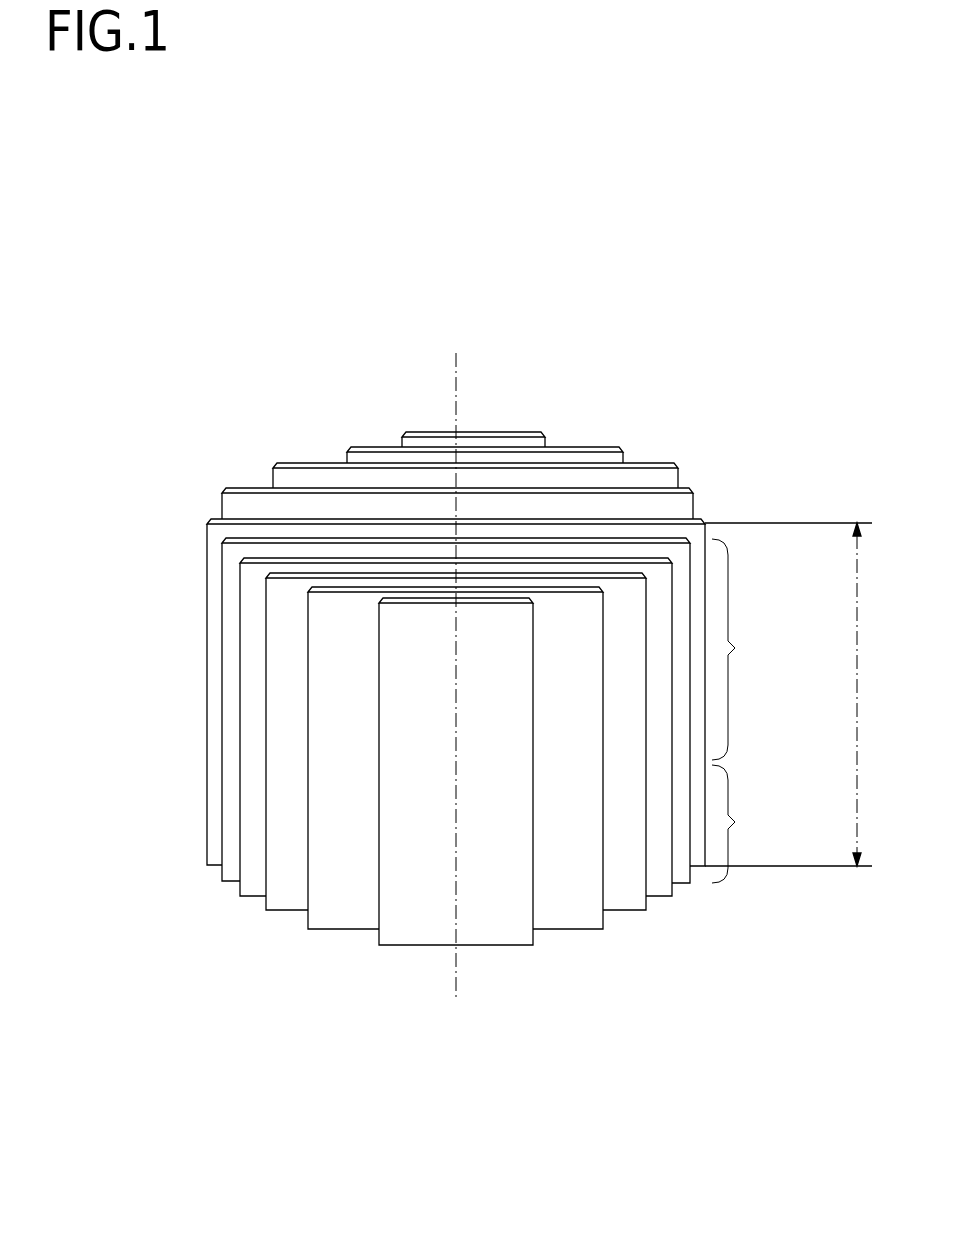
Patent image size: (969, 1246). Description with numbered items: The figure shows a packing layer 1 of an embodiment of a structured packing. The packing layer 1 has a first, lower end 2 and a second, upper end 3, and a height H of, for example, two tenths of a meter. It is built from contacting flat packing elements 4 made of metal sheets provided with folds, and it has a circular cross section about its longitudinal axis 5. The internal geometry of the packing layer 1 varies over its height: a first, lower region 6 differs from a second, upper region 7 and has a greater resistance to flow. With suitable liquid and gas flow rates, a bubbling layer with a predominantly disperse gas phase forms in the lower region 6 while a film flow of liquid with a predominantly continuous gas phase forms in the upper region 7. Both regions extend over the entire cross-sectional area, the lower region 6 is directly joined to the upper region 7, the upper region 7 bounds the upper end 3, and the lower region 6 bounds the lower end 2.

The packing layer 1 is at (578, 428).
The first, lower end 2 is at (192, 868).
The second, upper end 3 is at (197, 553).
The flat packing elements 4 is at (628, 912).
The longitudinal axis 5 is at (457, 407).
The first, lower region 6 is at (737, 824).
The second, upper region 7 is at (734, 649).
The height H is at (788, 694).